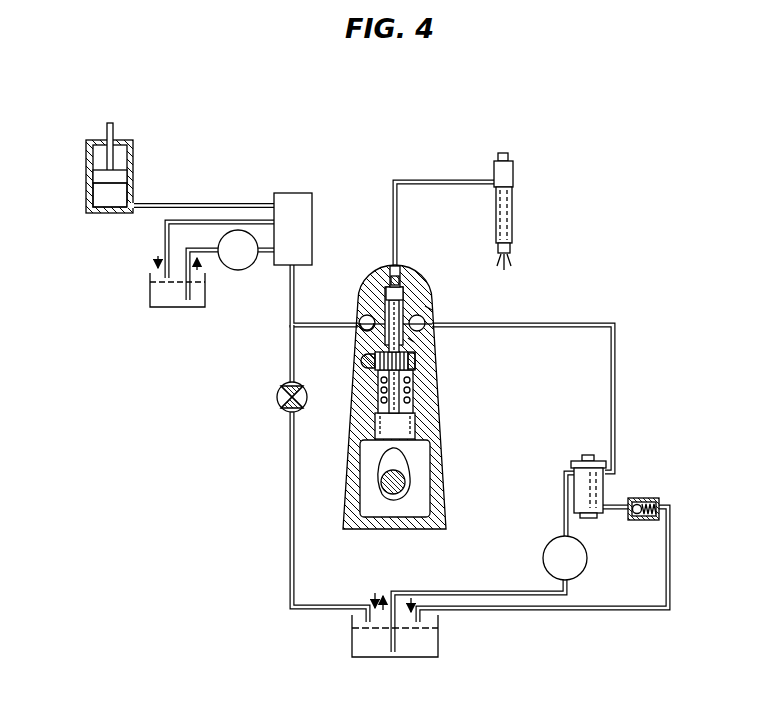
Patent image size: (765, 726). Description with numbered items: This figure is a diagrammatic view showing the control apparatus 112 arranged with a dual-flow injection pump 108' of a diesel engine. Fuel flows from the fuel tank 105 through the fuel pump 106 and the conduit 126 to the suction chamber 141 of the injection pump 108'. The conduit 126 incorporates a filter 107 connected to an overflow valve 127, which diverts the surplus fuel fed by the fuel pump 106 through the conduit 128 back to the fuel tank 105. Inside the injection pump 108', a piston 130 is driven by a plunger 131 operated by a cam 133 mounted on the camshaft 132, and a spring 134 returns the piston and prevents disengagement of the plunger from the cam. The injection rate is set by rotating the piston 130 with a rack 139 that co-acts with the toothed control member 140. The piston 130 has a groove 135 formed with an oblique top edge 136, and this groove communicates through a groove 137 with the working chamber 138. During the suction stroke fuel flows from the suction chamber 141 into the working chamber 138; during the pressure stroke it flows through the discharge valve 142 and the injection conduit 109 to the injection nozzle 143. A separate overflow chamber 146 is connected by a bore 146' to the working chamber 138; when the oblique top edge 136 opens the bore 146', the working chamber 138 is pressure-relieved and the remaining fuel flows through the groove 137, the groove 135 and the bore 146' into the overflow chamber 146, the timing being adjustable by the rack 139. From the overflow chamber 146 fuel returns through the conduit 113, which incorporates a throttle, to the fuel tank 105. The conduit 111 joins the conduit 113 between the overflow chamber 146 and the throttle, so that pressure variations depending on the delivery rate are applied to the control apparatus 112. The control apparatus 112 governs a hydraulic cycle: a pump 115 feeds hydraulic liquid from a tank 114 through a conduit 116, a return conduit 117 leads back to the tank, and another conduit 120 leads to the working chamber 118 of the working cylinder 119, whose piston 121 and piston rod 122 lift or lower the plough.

The fuel tank 105 is at (355, 646).
The fuel pump 106 is at (543, 559).
The fuel filter 107 is at (596, 487).
The dual-flow injection pump 108' is at (394, 415).
The injection conduit 109 is at (436, 180).
The conduit 111 is at (290, 304).
The control apparatus 112 is at (305, 240).
The conduit 113 is at (290, 367).
The tank 114 is at (152, 294).
The pump 115 is at (239, 272).
The conduit 116 is at (197, 252).
The return conduit 117 is at (233, 220).
The working chamber 118 is at (118, 195).
The working cylinder 119 is at (134, 153).
The conduit 120 is at (203, 206).
The piston 121 is at (118, 175).
The piston rod 122 is at (113, 129).
The conduit 126 is at (616, 362).
The overflow valve 127 is at (646, 497).
The conduit 128 is at (670, 558).
The piston 130 is at (390, 318).
The plunger 131 is at (410, 429).
The camshaft 132 is at (400, 483).
The cam 133 is at (405, 459).
The spring 134 is at (417, 396).
The groove 135 is at (413, 341).
The oblique top edge 136 is at (380, 355).
The groove 137 is at (432, 310).
The working chamber 138 is at (404, 295).
The rack 139 is at (370, 363).
The toothed control member 140 is at (417, 363).
The suction chamber 141 is at (428, 329).
The discharge valve 142 is at (401, 279).
The injection nozzle 143 is at (512, 217).
The overflow chamber 146 is at (344, 337).
The bore 146' is at (349, 318).